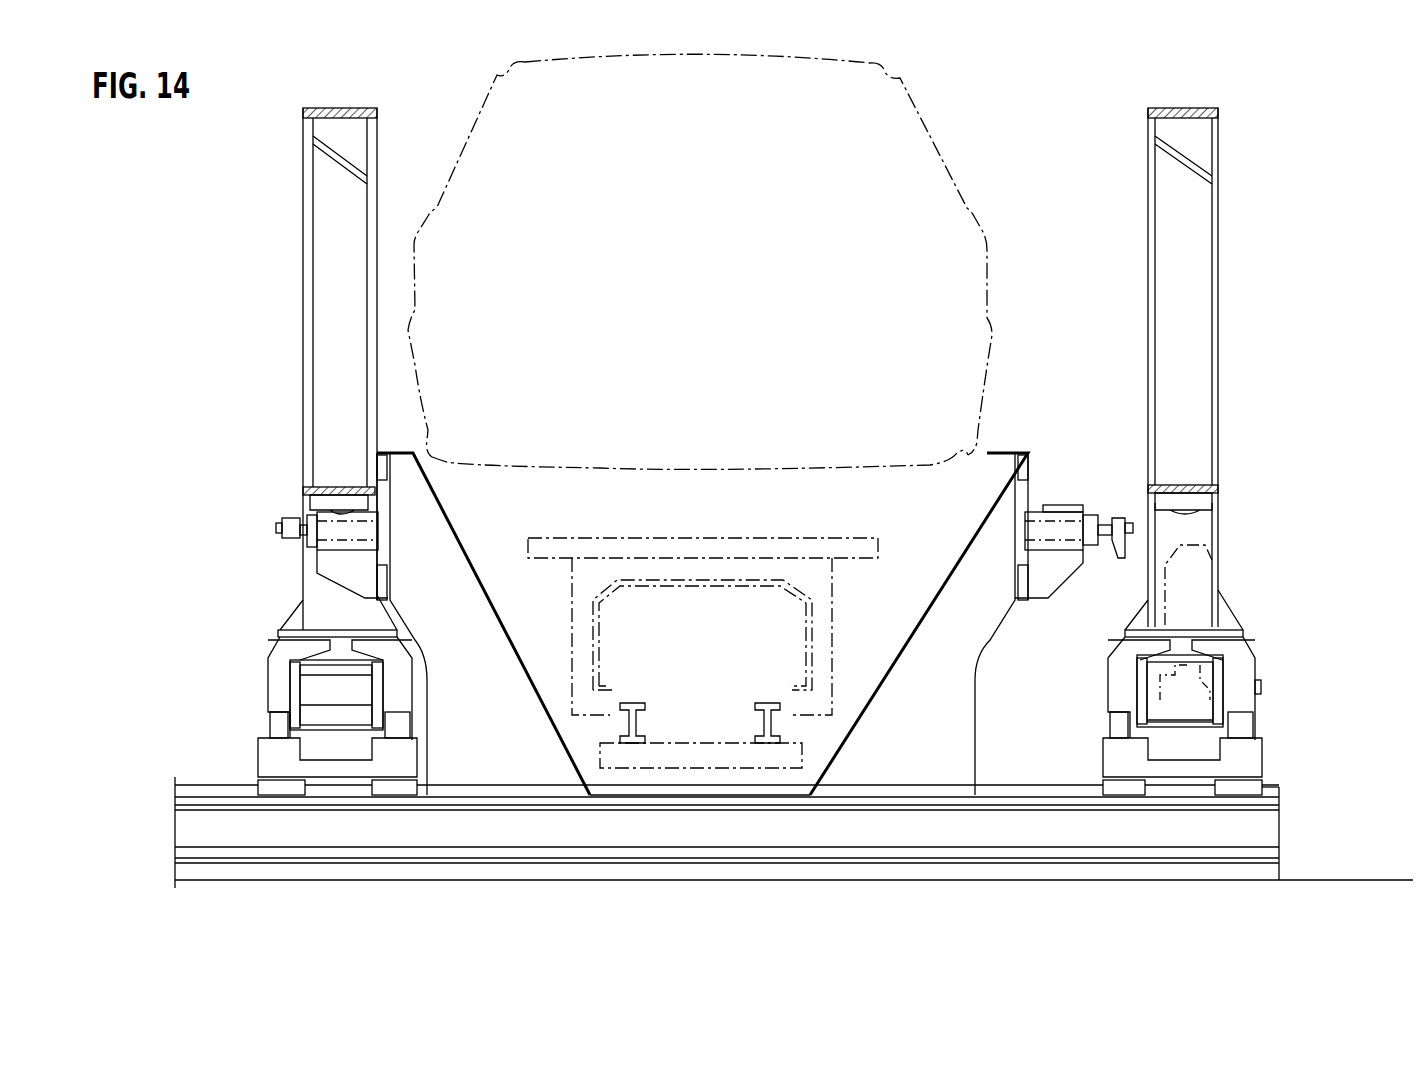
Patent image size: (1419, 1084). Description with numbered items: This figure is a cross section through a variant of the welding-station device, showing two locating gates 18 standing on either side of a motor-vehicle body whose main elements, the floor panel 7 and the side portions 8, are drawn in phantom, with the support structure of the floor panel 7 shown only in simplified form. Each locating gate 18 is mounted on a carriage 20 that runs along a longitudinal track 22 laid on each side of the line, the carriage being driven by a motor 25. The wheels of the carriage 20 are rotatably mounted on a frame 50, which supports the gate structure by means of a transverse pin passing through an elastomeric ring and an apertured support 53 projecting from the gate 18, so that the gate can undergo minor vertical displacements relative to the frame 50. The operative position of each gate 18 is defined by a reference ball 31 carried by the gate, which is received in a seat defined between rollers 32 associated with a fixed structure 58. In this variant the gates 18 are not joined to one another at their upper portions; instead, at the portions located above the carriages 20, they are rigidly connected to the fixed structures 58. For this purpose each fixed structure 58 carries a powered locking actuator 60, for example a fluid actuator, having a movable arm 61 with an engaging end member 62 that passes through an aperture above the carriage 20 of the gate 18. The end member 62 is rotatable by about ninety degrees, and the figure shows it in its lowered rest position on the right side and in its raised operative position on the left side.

The floor panel 7 is at (862, 474).
The side portions 8 is at (490, 120).
The locating gate 18 is at (312, 123).
The carriage 20 is at (228, 591).
The longitudinal track 22 is at (268, 762).
The motor 25 is at (1205, 585).
The reference roller or ball 31 is at (388, 492).
The roller 32 is at (345, 527).
The frame 50 is at (266, 660).
The apertured support 53 is at (1195, 690).
The fixed structure 58 is at (460, 555).
The powered locking actuator 60 is at (385, 528).
The movable arm 61 is at (1100, 545).
The engaging end member 62 is at (292, 520).